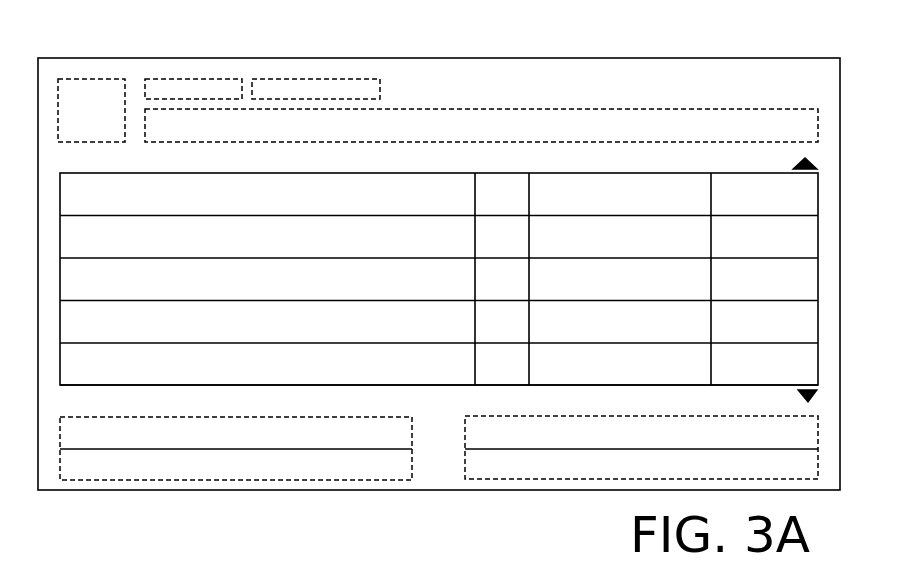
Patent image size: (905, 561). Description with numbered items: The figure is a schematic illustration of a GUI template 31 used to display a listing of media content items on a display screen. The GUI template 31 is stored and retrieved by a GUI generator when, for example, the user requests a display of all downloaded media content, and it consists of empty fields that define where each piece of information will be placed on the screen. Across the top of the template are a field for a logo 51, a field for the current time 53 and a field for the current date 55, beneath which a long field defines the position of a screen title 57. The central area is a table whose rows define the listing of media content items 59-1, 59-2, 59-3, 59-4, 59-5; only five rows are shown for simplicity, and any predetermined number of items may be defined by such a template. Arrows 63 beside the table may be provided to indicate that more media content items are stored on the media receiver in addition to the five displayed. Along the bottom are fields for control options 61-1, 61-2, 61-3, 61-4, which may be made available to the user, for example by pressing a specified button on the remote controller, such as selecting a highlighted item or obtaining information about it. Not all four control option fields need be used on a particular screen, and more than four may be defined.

The GUI template 31 is at (130, 515).
The logo 51 is at (104, 88).
The current time 53 is at (218, 88).
The current date 55 is at (360, 88).
The screen title 57 is at (724, 120).
The media content item field 59-1 is at (617, 216).
The media content item field 59-2 is at (617, 258).
The media content item field 59-3 is at (617, 300).
The media content item field 59-4 is at (617, 343).
The media content item field 59-5 is at (617, 385).
The control option 61-1 is at (282, 438).
The control option 61-2 is at (358, 470).
The control option 61-3 is at (485, 438).
The control option 61-4 is at (527, 470).
The arrows 63 is at (800, 396).